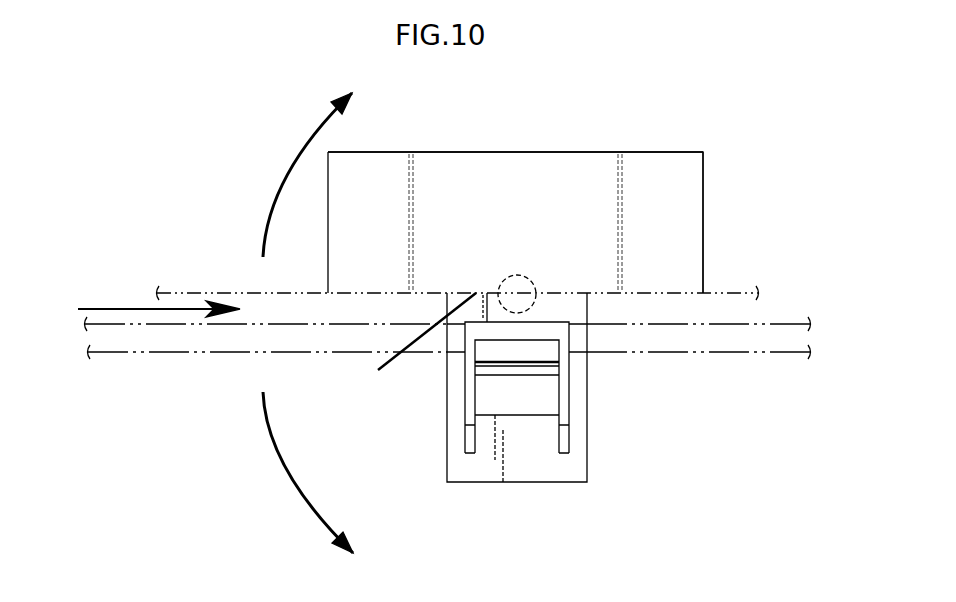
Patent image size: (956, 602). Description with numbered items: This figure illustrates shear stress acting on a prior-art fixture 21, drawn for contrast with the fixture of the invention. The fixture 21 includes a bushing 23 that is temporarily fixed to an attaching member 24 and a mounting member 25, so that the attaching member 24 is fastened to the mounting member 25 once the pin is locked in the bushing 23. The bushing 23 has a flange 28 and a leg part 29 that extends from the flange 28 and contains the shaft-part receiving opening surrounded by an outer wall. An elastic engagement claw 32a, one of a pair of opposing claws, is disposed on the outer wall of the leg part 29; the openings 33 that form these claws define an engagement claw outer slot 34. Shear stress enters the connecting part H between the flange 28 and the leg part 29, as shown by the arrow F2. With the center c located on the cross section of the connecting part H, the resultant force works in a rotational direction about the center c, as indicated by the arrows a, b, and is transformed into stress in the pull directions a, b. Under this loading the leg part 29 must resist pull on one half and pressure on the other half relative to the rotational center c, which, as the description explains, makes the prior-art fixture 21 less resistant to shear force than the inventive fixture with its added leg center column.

The fixture 21 is at (626, 124).
The bushing 23 is at (706, 148).
The attaching member 24 is at (243, 302).
The mounting member 25 is at (227, 340).
The flange 28 is at (438, 158).
The leg part 29 is at (586, 473).
The elastic engagement claw 32a is at (510, 362).
The opening 33 is at (556, 330).
The engagement claw outer slot 34 is at (567, 434).
The arrow / pull direction a is at (285, 178).
The arrow / pull direction b is at (285, 470).
The center c is at (527, 272).
The connecting part H is at (415, 341).
The arrow (shear stress) F2 is at (120, 307).